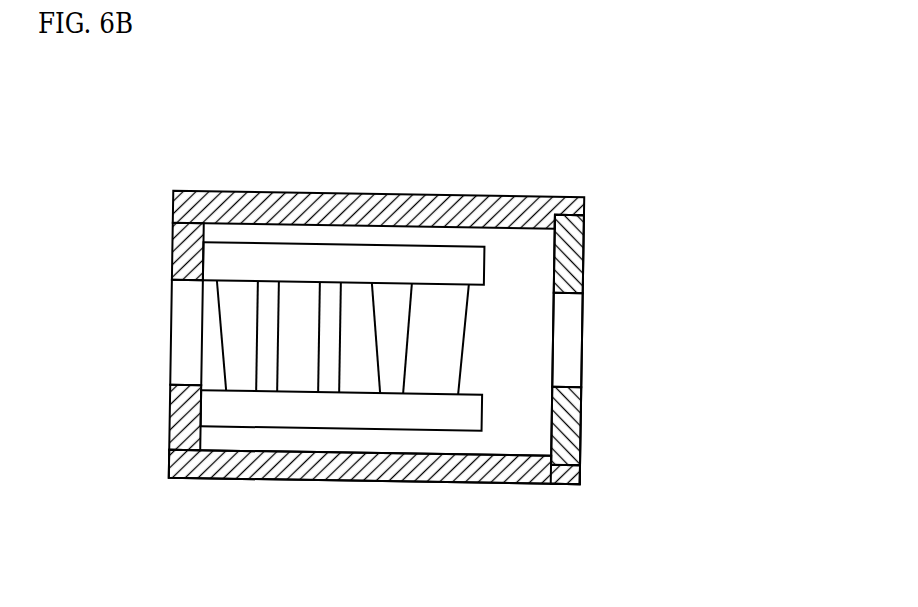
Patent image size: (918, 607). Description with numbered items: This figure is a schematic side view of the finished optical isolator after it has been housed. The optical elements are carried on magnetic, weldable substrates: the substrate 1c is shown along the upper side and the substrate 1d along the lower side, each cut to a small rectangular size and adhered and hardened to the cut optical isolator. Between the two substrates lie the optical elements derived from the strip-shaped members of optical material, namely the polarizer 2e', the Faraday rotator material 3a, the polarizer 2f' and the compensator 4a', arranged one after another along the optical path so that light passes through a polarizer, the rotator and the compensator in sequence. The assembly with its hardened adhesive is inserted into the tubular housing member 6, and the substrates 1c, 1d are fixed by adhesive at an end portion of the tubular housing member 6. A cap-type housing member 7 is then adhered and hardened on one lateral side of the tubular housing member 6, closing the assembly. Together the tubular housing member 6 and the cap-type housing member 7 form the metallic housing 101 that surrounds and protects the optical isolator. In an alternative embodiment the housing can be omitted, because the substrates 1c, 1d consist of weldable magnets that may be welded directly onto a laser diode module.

The substrate 1c is at (227, 262).
The substrate 1d is at (220, 417).
The polarizer 2e' is at (242, 242).
The polarizer 2f' is at (364, 243).
The long-shaped member for Faraday rotator 3a is at (307, 368).
The compensator 4a' is at (442, 245).
The tubular housing member 6 is at (577, 468).
The cap-type housing member 7 is at (580, 415).
The metallic housing 101 is at (722, 362).